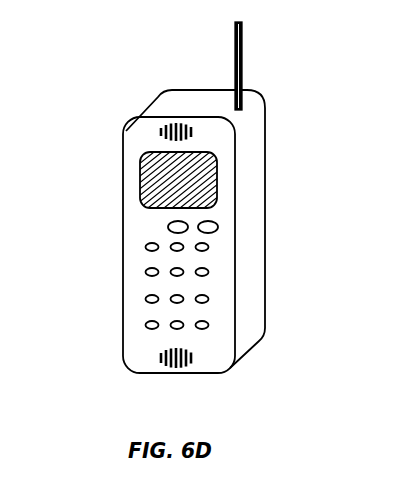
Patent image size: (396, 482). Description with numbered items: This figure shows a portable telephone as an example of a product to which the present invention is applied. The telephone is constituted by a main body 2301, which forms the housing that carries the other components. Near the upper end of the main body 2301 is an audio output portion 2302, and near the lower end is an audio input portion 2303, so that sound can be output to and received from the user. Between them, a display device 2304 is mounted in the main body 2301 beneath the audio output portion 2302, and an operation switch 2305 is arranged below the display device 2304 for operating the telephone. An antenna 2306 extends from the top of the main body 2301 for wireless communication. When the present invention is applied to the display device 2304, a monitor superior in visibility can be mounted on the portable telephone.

The main body 2301 is at (192, 96).
The audio output portion 2302 is at (173, 122).
The audio input portion 2303 is at (175, 366).
The display device 2304 is at (143, 160).
The operation switch 2305 is at (145, 298).
The antenna 2306 is at (240, 63).